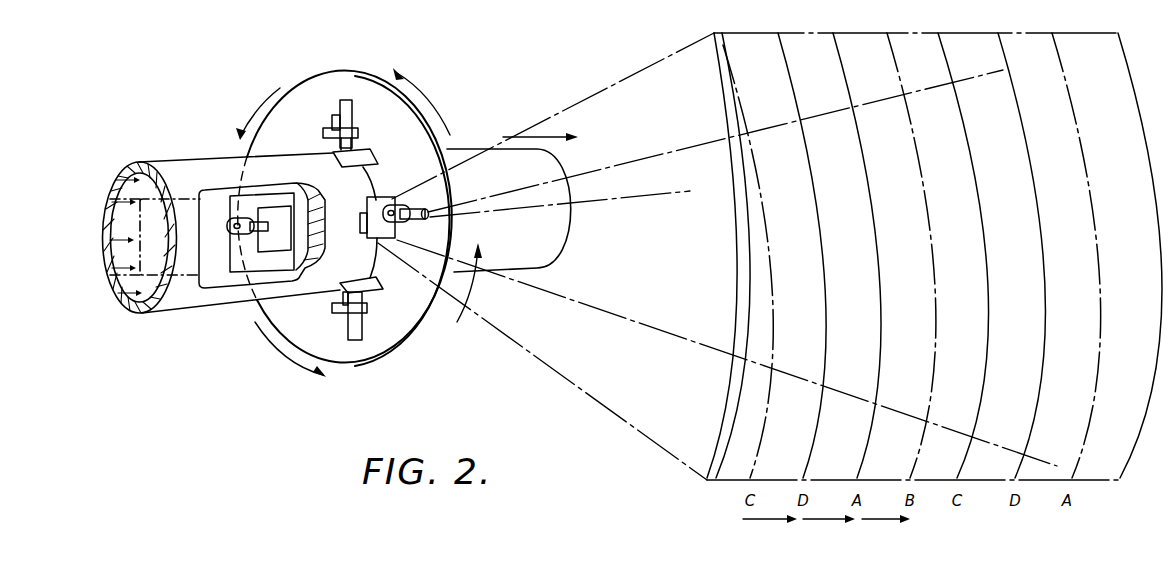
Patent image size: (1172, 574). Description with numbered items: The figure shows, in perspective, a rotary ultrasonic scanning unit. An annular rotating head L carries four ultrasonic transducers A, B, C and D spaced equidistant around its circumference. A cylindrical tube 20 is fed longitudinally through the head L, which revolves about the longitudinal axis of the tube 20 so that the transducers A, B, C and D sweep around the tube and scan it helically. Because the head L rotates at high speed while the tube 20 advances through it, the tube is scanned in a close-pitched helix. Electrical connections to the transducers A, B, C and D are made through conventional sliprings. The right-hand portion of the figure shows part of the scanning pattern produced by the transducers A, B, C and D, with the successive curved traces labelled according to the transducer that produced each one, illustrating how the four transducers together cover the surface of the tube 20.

The cylindrical tube 20 is at (194, 170).
The ultrasonic transducer A is at (245, 247).
The ultrasonic transducer B is at (357, 312).
The ultrasonic transducer C is at (398, 218).
The ultrasonic transducer D is at (351, 133).
The annular rotating head L is at (316, 80).